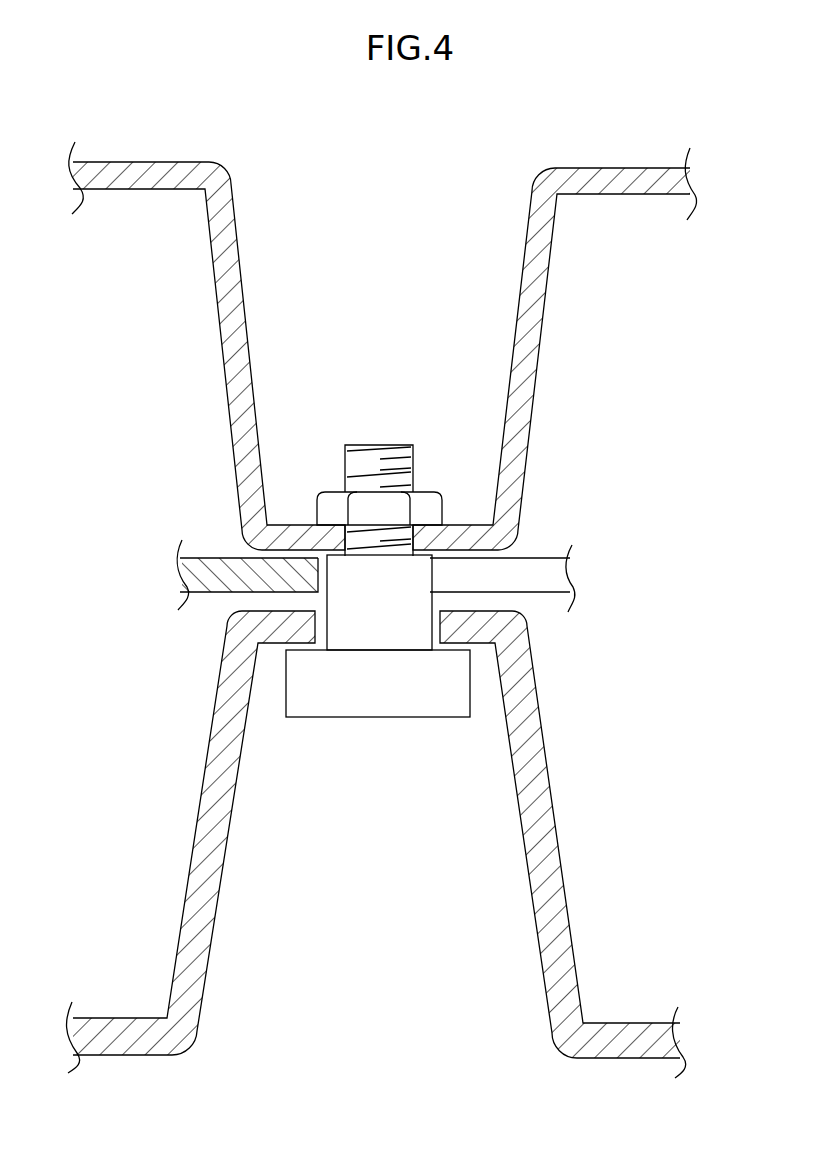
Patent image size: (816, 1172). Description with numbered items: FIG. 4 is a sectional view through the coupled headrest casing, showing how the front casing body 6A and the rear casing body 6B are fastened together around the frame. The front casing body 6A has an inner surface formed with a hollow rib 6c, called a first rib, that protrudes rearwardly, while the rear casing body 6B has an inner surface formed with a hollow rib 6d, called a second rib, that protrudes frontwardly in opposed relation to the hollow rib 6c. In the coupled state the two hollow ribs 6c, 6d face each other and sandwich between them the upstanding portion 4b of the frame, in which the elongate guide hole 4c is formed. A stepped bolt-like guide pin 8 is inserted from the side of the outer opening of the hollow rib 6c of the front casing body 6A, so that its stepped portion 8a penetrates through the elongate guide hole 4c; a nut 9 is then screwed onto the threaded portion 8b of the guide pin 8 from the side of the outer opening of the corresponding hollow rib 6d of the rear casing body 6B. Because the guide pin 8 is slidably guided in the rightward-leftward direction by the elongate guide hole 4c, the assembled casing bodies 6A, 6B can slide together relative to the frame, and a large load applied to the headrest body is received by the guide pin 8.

The front casing body 6A is at (620, 1060).
The rear casing body 6B is at (630, 168).
The hollow rib (first rib) 6c is at (560, 845).
The hollow rib (second rib) 6d is at (542, 343).
The upstanding portion 4b is at (215, 583).
The elongate guide hole 4c is at (533, 587).
The guide pin 8 is at (398, 705).
The stepped portion 8a is at (368, 608).
The threaded portion 8b is at (380, 450).
The nut 9 is at (446, 522).